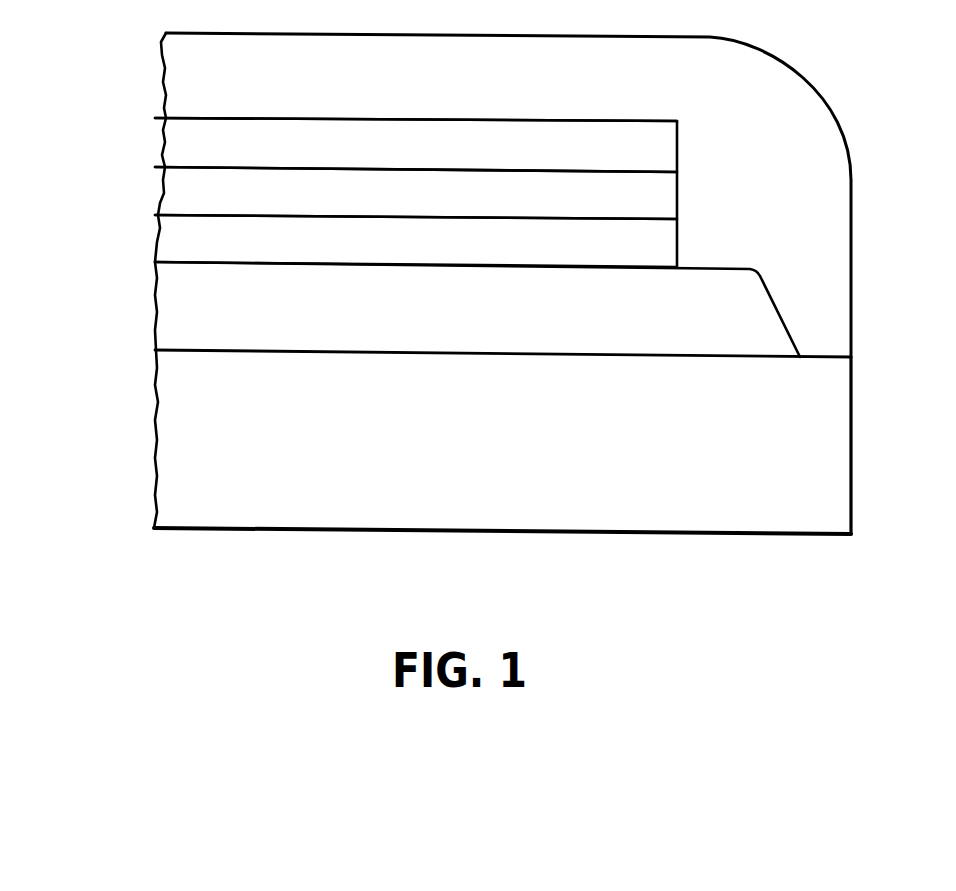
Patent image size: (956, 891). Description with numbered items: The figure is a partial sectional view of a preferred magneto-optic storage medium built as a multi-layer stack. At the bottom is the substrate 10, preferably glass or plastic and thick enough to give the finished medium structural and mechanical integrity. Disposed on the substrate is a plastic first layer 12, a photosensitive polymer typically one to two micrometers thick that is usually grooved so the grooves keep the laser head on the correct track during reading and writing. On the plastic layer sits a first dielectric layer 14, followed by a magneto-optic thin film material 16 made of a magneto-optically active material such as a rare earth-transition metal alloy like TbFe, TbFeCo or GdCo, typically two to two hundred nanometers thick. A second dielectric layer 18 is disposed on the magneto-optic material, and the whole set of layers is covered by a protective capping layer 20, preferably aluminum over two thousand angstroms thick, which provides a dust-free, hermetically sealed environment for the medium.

The substrate 10 is at (167, 462).
The plastic first layer 12 is at (175, 312).
The first dielectric layer 14 is at (170, 240).
The magneto-optic thin film material 16 is at (180, 190).
The second dielectric layer 18 is at (182, 139).
The capping layer 20 is at (183, 78).